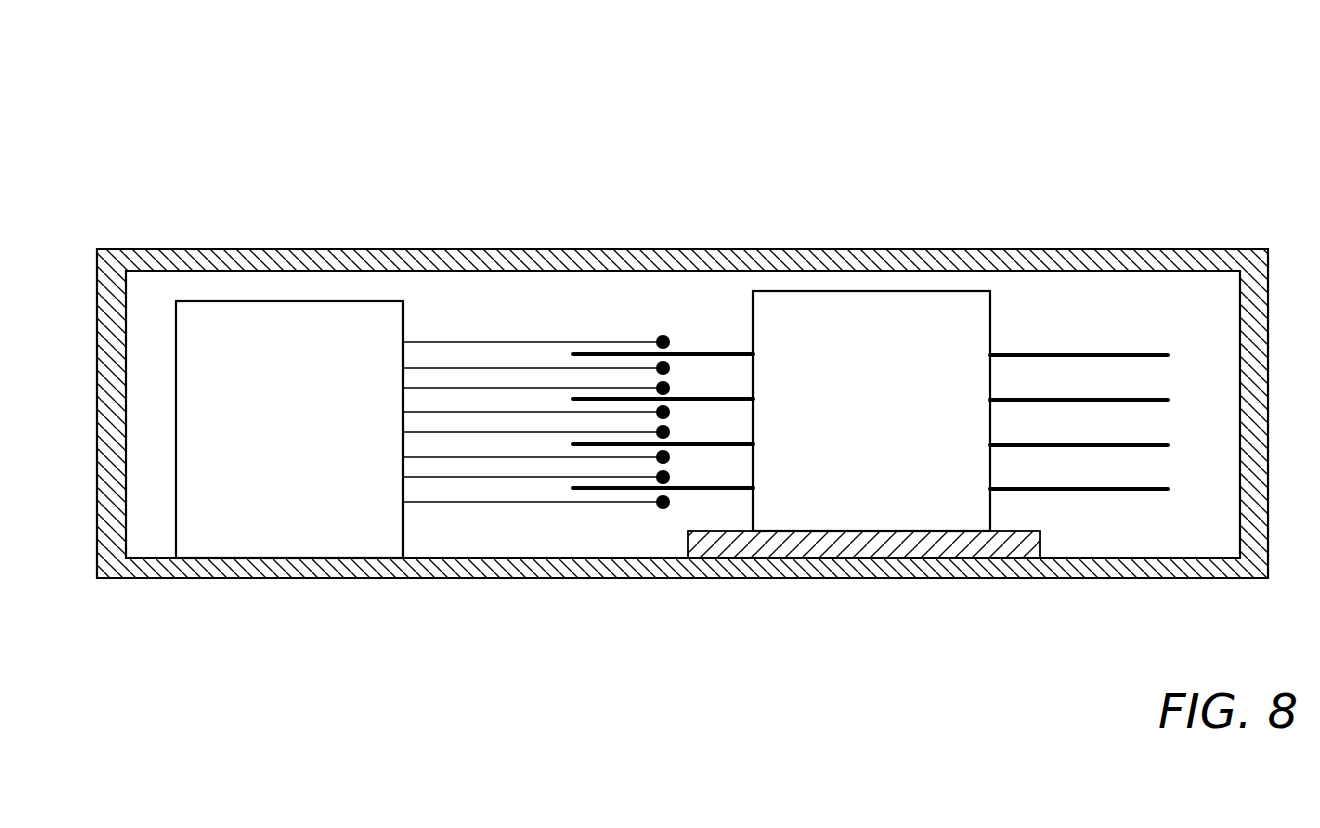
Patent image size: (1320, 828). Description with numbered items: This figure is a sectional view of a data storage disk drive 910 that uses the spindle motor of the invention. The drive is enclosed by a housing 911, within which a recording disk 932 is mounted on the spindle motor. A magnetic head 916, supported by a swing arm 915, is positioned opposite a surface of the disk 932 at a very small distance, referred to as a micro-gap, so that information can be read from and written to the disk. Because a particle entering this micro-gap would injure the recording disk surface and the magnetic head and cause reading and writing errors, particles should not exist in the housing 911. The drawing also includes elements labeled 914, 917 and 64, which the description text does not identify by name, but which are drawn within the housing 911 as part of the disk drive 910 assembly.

The data storage disk drive 910 is at (622, 210).
The housing 911 is at (937, 250).
The optical element block 914 is at (227, 332).
The swing arm 915 is at (502, 368).
The magnetic head 916 is at (666, 368).
The connection portion / thick leads 917 is at (416, 292).
The circuit block 64 is at (800, 345).
The recording disk 932 is at (1090, 400).